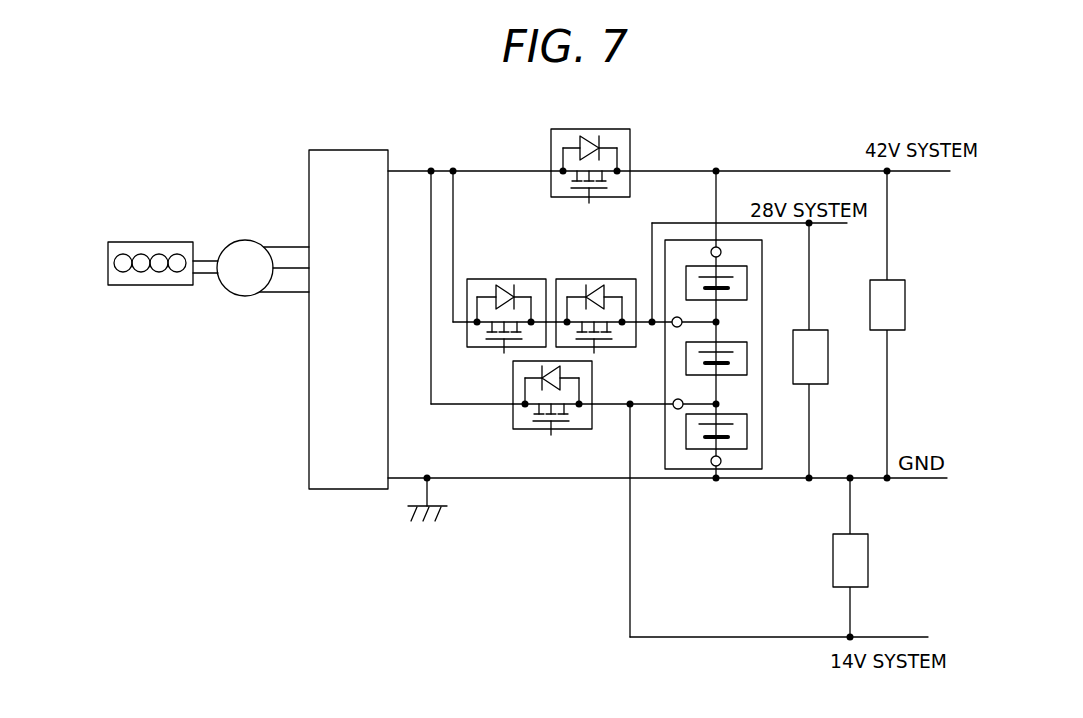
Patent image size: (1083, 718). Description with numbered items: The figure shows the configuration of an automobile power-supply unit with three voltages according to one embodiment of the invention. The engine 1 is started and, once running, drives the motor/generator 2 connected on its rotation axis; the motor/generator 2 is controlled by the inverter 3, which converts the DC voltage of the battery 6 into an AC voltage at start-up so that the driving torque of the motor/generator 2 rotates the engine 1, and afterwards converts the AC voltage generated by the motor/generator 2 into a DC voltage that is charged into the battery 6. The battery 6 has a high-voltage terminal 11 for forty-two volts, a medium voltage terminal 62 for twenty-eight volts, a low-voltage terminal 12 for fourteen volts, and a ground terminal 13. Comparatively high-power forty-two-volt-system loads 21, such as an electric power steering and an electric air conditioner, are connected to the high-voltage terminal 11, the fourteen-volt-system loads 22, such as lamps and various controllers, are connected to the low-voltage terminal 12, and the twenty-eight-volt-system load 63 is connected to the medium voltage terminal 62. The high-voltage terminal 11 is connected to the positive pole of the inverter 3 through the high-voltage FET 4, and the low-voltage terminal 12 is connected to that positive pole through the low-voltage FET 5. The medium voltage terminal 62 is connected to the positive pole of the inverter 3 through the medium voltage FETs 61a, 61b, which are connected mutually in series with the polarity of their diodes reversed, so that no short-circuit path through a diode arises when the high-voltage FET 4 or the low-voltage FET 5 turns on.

The engine 1 is at (170, 242).
The motor/generator 2 is at (250, 239).
The inverter 3 is at (366, 150).
The high-voltage FET 4 is at (603, 129).
The low-voltage FET 5 is at (594, 392).
The battery 6 is at (763, 296).
The high-voltage terminal 11 is at (711, 248).
The low-voltage terminal 12 is at (674, 409).
The ground terminal 13 is at (712, 467).
The 42V-system loads 21 is at (894, 280).
The 14V-system loads 22 is at (859, 534).
The medium voltage FET 61a is at (516, 279).
The medium voltage FET 61b is at (624, 265).
The medium voltage terminal 62 is at (673, 328).
The 28V-system load 63 is at (818, 330).